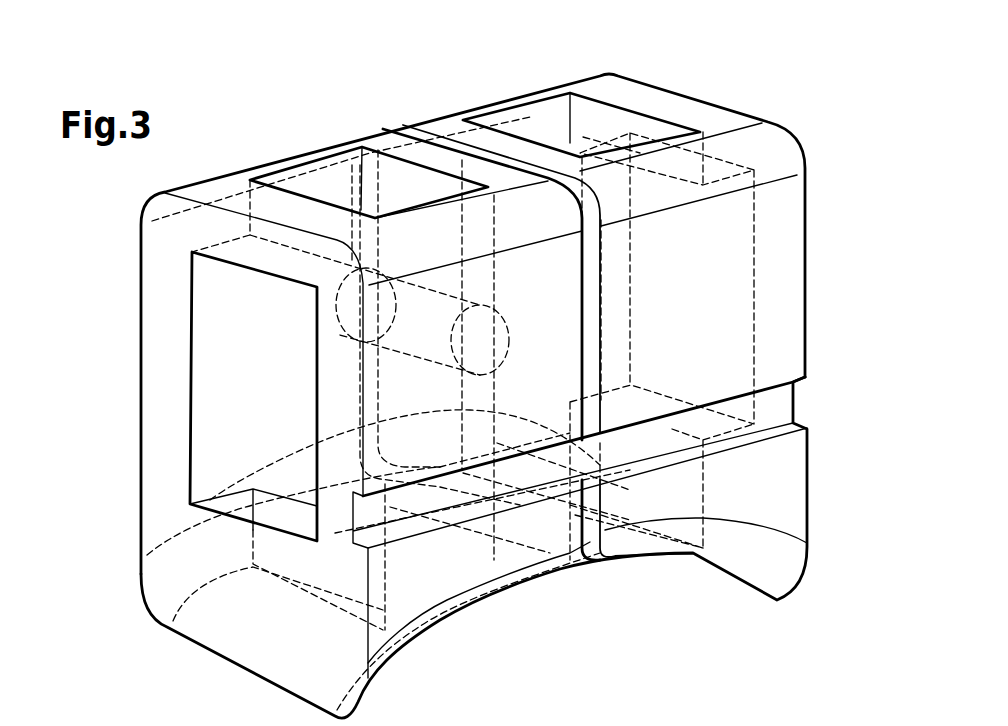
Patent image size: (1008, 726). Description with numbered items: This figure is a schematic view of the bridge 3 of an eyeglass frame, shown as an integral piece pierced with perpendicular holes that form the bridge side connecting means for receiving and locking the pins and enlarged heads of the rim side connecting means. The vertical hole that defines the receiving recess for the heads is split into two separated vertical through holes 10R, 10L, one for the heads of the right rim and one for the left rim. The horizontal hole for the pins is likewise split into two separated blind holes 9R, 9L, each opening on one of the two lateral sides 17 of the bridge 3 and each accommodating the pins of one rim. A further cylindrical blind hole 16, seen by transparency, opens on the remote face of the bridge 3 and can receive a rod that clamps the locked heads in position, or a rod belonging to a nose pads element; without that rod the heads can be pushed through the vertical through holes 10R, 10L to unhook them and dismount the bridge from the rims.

The bridge 3 is at (436, 572).
The blind hole 9R is at (212, 345).
The blind hole 9L is at (740, 293).
The vertical through hole 10R is at (333, 185).
The vertical through hole 10L is at (553, 128).
The blind hole 16 is at (486, 345).
The lateral sides 17 is at (818, 170).